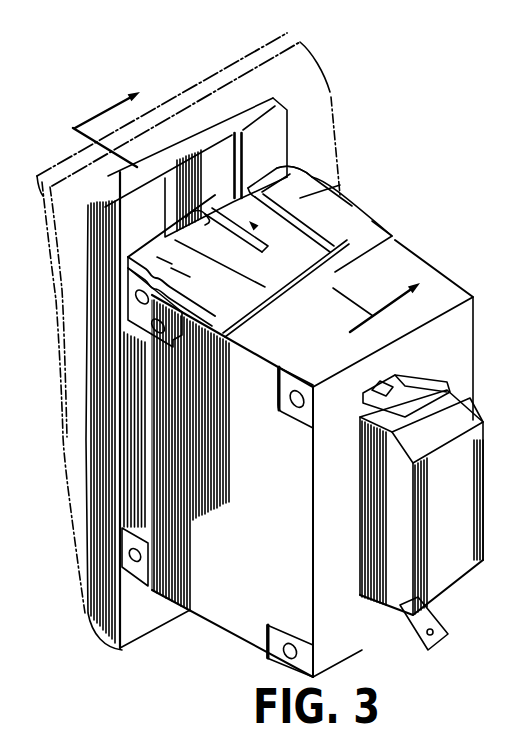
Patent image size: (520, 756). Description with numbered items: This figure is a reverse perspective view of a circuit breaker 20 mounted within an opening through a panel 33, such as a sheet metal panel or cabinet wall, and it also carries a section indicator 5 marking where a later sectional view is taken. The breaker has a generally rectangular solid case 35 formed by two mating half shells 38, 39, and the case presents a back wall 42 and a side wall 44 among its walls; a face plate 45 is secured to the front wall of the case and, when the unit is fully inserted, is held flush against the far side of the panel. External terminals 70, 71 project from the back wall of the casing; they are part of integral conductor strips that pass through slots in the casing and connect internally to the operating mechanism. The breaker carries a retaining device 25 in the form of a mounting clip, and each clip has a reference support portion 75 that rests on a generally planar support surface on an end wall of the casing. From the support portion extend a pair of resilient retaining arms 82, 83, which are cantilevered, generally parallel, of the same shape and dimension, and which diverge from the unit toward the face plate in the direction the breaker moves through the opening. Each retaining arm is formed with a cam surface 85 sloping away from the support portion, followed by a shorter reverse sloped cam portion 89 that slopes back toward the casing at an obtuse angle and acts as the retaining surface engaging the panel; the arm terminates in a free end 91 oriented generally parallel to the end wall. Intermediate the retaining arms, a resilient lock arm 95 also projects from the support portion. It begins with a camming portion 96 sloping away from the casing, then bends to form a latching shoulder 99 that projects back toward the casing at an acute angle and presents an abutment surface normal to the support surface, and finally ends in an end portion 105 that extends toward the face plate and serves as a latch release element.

The section line 5- 5 is at (246, 202).
The circuit breaker 20 is at (409, 238).
The retaining device 25 is at (350, 190).
The panel 33 is at (330, 105).
The case 35 is at (428, 273).
The half shell 38 is at (453, 328).
The half shell 39 is at (247, 634).
The back wall 42 is at (353, 627).
The side wall 44 is at (217, 603).
The face plate 45 is at (108, 198).
The external terminal 70 is at (440, 372).
The external terminal 71 is at (449, 633).
The reference support portion 75 is at (276, 266).
The resilient retaining arm 82 is at (174, 342).
The resilient retaining arm 83 is at (392, 222).
The cam surface 85 is at (333, 221).
The reverse sloped cam portion 89 is at (307, 176).
The free end 91 is at (276, 168).
The resilient lock arm 95 is at (198, 292).
The camming portion 96 is at (272, 265).
The latching shoulder 99 is at (128, 257).
The end portion 105 is at (200, 226).